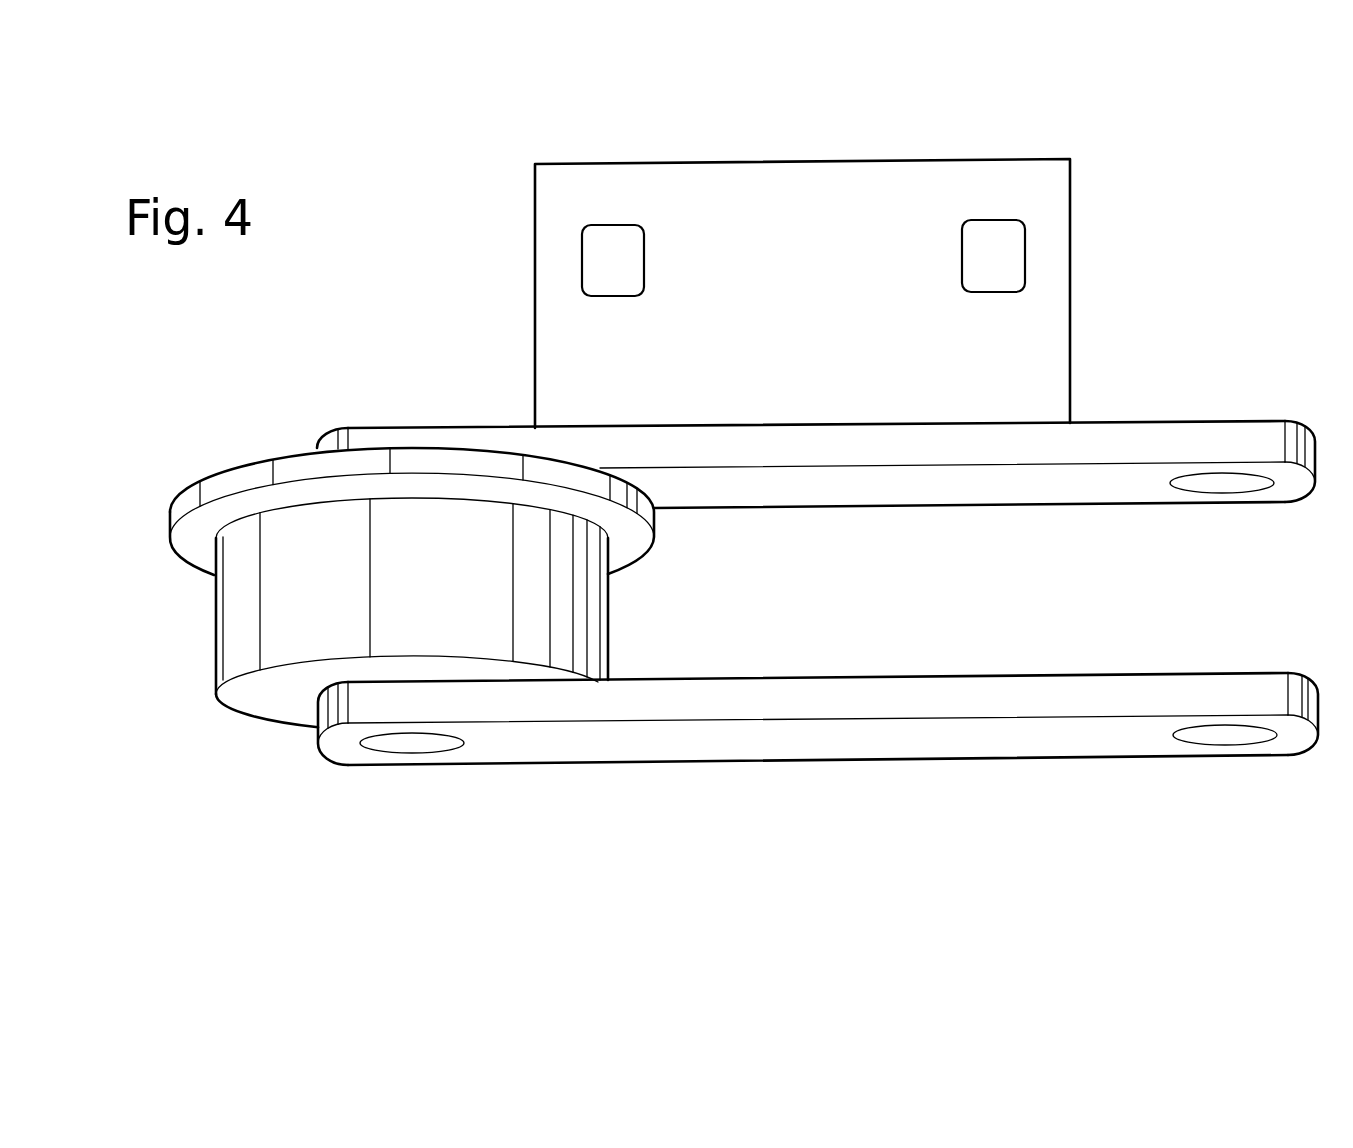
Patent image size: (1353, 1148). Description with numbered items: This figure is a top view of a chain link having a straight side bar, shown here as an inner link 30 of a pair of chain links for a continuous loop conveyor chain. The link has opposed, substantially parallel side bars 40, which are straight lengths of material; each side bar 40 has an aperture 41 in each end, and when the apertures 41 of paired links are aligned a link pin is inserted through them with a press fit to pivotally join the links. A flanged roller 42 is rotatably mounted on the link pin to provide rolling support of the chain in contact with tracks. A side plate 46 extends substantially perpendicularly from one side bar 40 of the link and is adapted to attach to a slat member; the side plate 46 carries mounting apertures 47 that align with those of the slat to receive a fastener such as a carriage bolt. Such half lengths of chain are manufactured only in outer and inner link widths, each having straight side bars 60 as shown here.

The inner link 30 is at (406, 232).
The side bar 40 is at (1138, 448).
The aperture 41 is at (1223, 482).
The roller 42 is at (288, 575).
The side plate 46 is at (808, 240).
The mounting aperture 47 is at (610, 247).
The straight side bar 60 is at (746, 802).